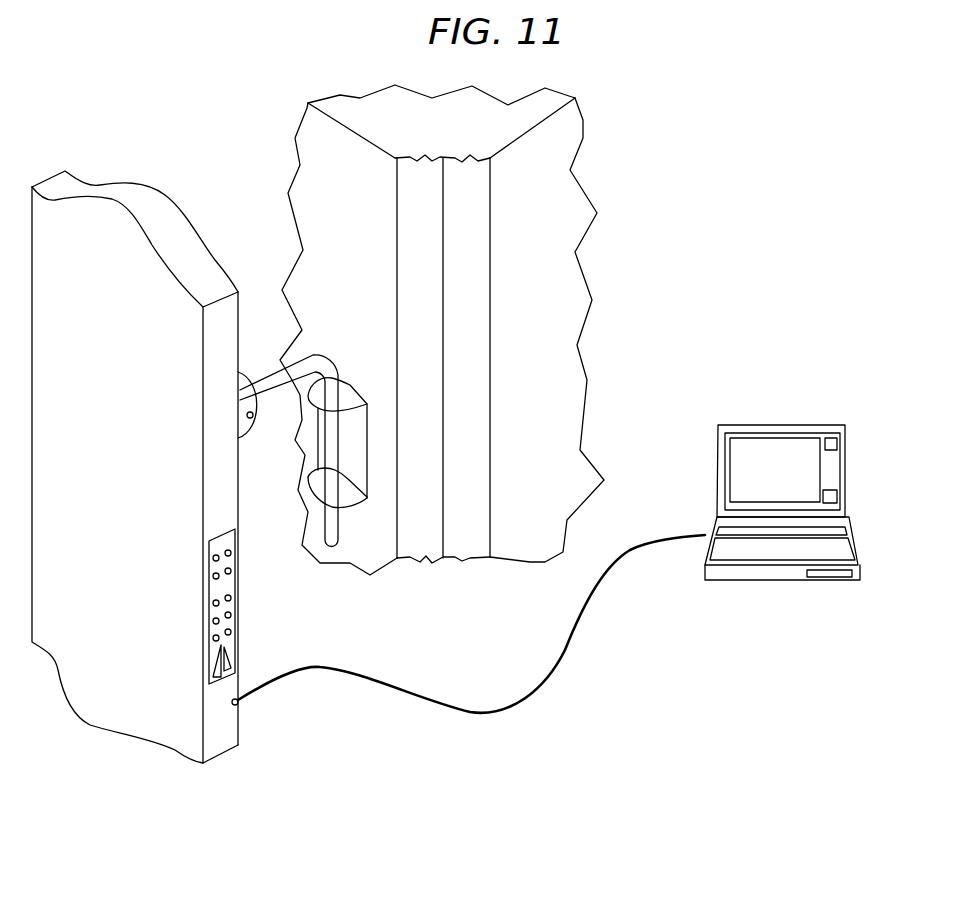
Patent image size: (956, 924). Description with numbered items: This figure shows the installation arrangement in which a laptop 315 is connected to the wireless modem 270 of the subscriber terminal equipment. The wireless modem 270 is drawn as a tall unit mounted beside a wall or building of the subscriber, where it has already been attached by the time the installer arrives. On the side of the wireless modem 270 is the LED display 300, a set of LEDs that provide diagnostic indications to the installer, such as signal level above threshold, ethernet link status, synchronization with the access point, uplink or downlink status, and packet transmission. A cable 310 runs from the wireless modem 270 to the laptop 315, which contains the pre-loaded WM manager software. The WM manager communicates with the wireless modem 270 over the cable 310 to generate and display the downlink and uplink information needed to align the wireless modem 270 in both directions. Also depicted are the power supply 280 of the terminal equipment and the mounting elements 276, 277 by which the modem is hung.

The wireless modem 270 is at (203, 383).
The hinge bracket arm 276 is at (282, 371).
The hinge knuckle 277 is at (348, 397).
The power supply 280 is at (492, 267).
The LED display 300 is at (229, 541).
The cable 310 is at (596, 628).
The laptop 315 is at (848, 455).